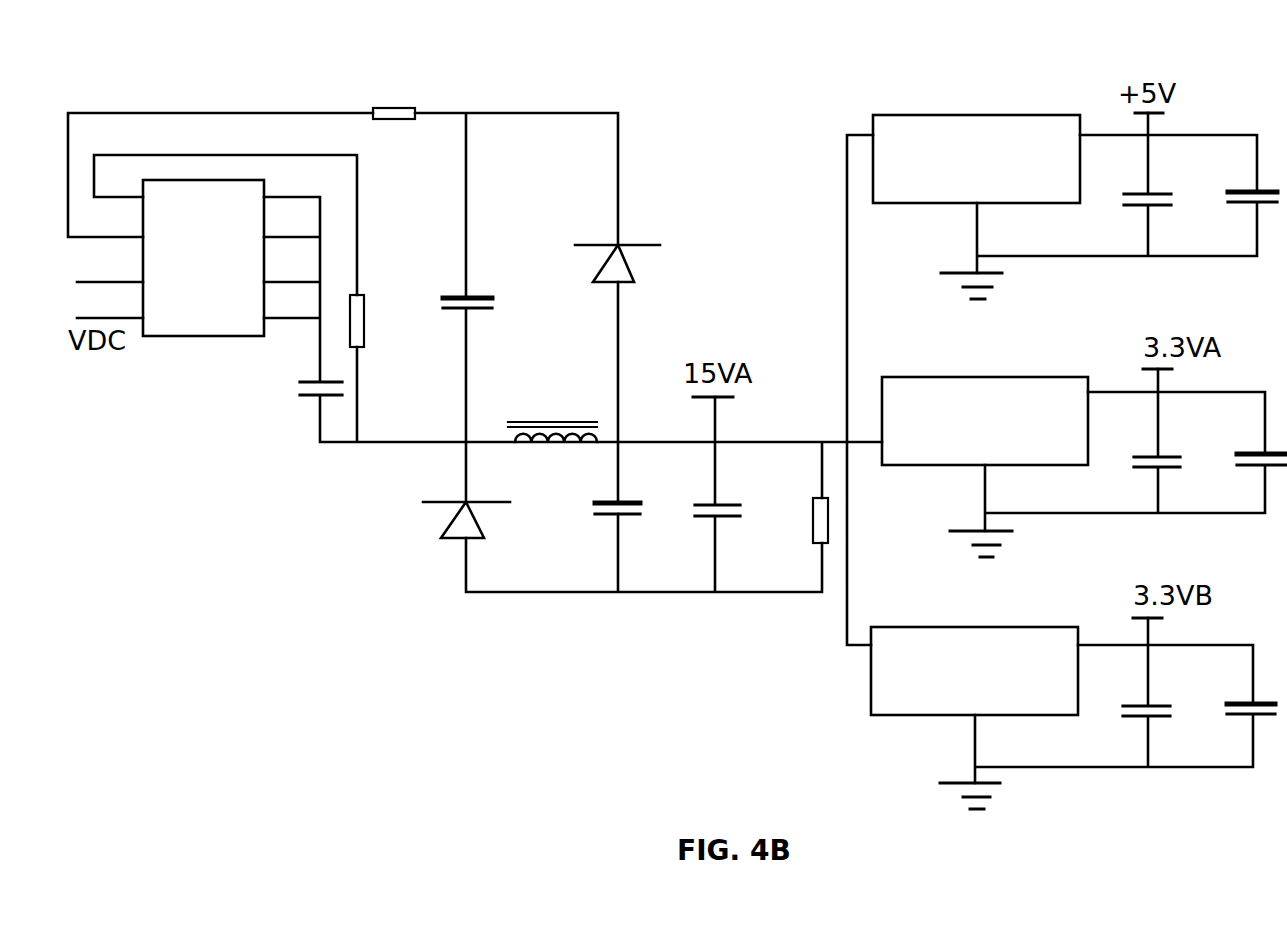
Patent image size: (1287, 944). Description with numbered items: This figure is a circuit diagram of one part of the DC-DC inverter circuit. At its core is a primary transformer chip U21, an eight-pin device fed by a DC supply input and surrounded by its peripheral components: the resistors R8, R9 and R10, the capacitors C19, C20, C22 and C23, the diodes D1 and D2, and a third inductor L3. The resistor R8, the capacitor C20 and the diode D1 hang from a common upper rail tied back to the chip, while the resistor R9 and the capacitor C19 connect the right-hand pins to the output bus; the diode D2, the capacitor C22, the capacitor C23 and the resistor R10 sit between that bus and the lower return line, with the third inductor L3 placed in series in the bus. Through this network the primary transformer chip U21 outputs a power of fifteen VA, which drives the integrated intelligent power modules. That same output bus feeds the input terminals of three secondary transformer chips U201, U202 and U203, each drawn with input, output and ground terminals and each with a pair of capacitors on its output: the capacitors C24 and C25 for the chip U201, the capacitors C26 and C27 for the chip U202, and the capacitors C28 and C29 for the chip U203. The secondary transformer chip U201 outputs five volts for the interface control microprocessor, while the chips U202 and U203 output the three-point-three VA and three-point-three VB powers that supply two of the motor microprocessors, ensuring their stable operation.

The primary transformer chip U21 is at (203, 276).
The peripheral resistor R8 is at (394, 132).
The peripheral resistor R9 is at (379, 321).
The peripheral resistor R10 is at (792, 520).
The capacitor C19 is at (292, 387).
The capacitor C20 is at (488, 323).
The capacitor C22 is at (594, 527).
The capacitor C23 is at (696, 528).
The capacitor C24 is at (1129, 219).
The capacitor C25 is at (1234, 218).
The capacitor C26 is at (1139, 480).
The capacitor C27 is at (1242, 478).
The capacitor C28 is at (1129, 730).
The capacitor C29 is at (1234, 729).
The diode D1 is at (603, 265).
The diode D2 is at (451, 520).
The third inductor L3 is at (552, 413).
The secondary transformer chip U201 is at (976, 140).
The secondary transformer chip U202 is at (985, 401).
The secondary transformer chip U203 is at (974, 652).